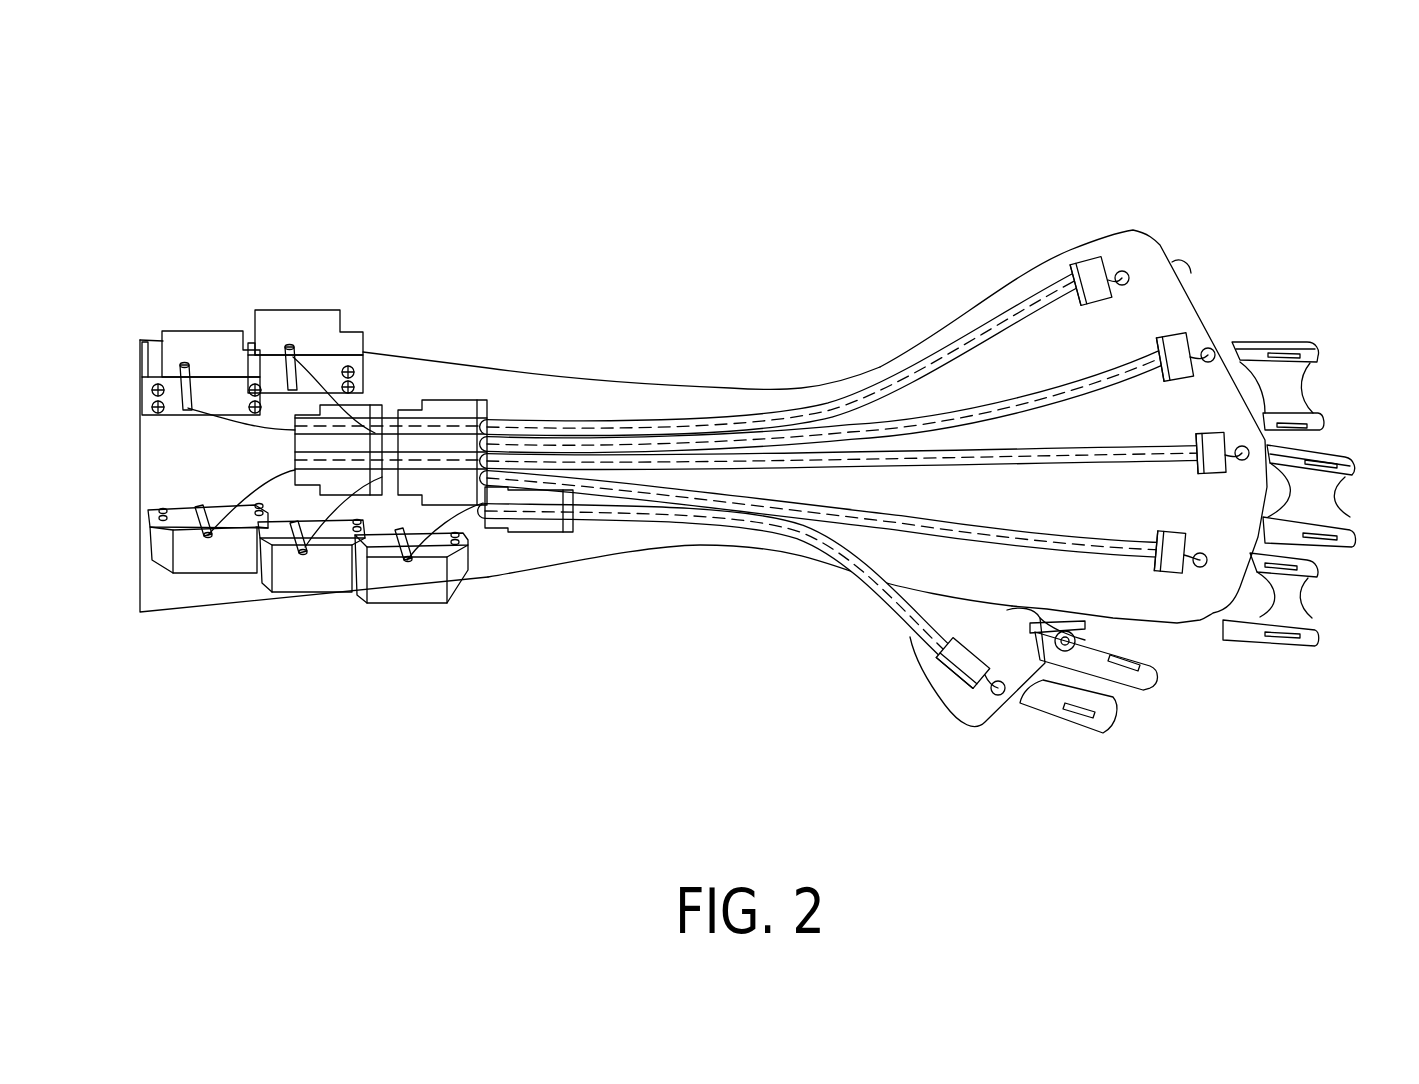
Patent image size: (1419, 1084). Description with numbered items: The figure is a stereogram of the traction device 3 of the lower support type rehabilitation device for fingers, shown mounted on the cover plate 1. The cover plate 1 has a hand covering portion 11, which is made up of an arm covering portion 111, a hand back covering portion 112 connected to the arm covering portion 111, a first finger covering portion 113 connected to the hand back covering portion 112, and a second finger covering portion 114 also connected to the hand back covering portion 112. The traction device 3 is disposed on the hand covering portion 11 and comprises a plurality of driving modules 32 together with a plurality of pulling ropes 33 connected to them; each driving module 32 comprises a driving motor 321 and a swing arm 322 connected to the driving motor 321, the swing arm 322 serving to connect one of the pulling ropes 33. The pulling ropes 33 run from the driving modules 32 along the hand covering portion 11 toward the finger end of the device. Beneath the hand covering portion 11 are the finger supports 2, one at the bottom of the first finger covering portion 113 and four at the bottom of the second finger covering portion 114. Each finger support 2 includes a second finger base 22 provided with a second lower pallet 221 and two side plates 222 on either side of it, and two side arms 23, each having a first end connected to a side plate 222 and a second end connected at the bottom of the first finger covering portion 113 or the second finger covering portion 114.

The cover plate 1 is at (658, 348).
The hand covering portion 11 is at (576, 428).
The arm covering portion 111 is at (725, 398).
The hand back covering portion 112 is at (962, 318).
The first finger covering portion 113 is at (975, 712).
The second finger covering portion 114 is at (1128, 238).
The finger support 2 is at (1283, 667).
The second finger base 22 is at (1188, 607).
The side plate 222 is at (1067, 722).
The second lower pallet 221 is at (1107, 685).
The side arm 23 is at (1047, 653).
The traction device 3 is at (310, 625).
The driving module 32 is at (162, 172).
The driving motor 321 is at (210, 340).
The swing arm 322 is at (167, 380).
The pulling rope 33 is at (218, 397).